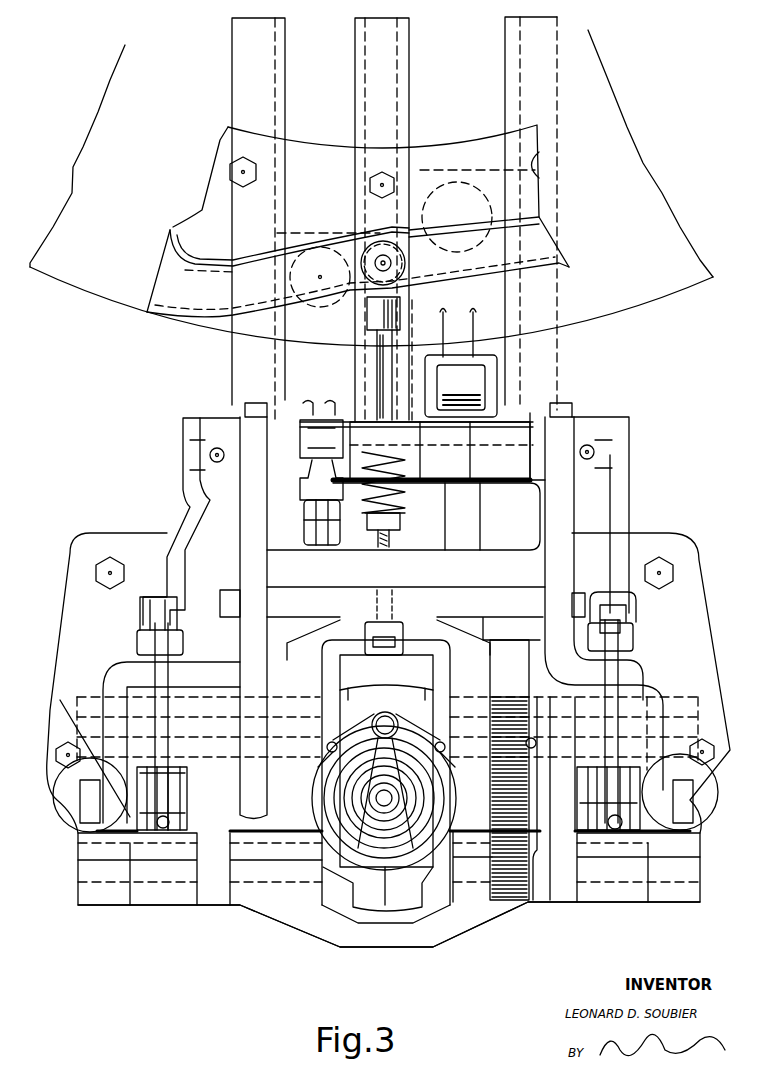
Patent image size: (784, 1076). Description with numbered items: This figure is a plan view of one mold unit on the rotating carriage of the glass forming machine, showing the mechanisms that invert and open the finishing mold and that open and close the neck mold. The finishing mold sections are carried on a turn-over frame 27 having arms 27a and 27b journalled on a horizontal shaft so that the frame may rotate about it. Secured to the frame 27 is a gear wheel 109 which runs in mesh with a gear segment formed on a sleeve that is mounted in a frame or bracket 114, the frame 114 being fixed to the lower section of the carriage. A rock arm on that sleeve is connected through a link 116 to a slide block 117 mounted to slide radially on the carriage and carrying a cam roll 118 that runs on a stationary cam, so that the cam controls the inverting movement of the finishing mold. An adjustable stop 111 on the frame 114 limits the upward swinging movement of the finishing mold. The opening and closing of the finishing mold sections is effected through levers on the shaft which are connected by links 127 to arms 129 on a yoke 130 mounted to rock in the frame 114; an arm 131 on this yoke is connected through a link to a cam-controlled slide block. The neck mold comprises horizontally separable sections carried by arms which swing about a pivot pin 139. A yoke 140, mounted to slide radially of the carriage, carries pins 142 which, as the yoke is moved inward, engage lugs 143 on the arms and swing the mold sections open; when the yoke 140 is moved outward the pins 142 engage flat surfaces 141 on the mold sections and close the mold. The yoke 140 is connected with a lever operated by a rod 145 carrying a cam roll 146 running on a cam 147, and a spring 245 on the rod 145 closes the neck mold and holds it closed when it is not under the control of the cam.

The slide block 117 is at (422, 170).
The cam roll 118 is at (467, 183).
The cam roll 146 is at (407, 267).
The cam 147 is at (217, 323).
The rod 145 is at (373, 372).
The yoke 130 is at (490, 427).
The arm 131 is at (305, 495).
The spring 245 is at (415, 500).
The link 116 is at (465, 525).
The arms 129 is at (622, 515).
The frame or bracket 114 is at (685, 613).
The adjustable stop 111 is at (403, 640).
The yoke 140 is at (323, 665).
The pivot pin 139 is at (387, 718).
The lugs 143 is at (332, 720).
The pins 142 is at (330, 745).
The flat surfaces 141 is at (320, 767).
The links 127 is at (607, 675).
The arm 27b is at (203, 870).
The turn-over frame 27 is at (270, 895).
The gear wheel 109 is at (518, 903).
The arm 27a is at (580, 848).